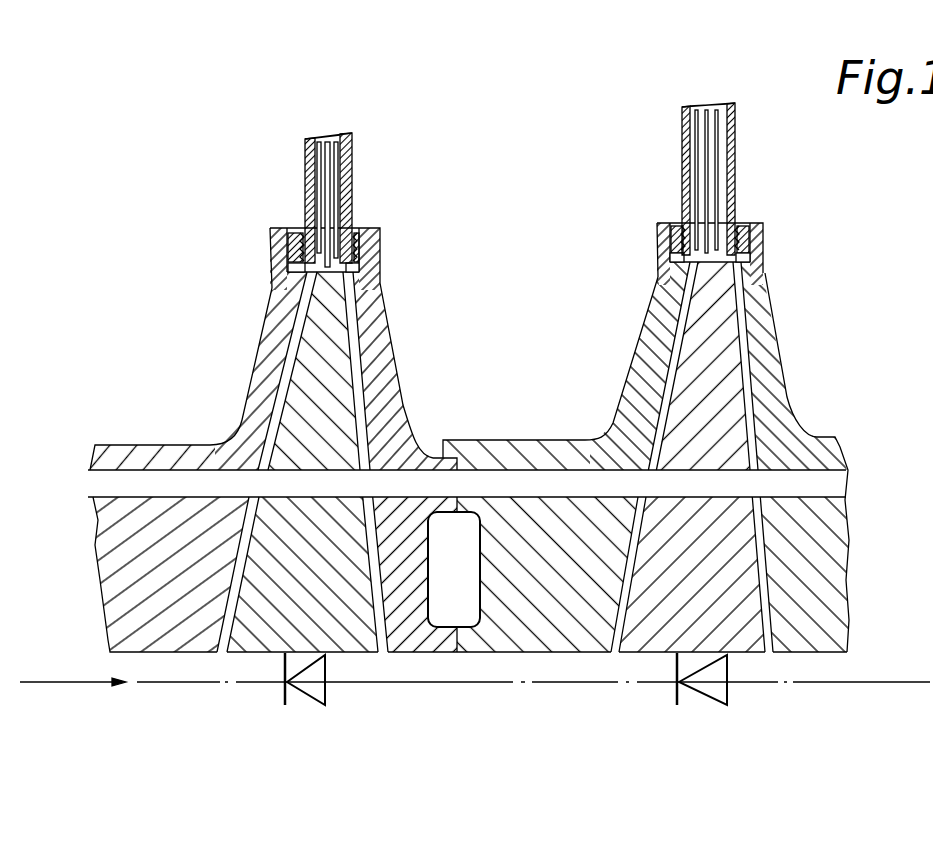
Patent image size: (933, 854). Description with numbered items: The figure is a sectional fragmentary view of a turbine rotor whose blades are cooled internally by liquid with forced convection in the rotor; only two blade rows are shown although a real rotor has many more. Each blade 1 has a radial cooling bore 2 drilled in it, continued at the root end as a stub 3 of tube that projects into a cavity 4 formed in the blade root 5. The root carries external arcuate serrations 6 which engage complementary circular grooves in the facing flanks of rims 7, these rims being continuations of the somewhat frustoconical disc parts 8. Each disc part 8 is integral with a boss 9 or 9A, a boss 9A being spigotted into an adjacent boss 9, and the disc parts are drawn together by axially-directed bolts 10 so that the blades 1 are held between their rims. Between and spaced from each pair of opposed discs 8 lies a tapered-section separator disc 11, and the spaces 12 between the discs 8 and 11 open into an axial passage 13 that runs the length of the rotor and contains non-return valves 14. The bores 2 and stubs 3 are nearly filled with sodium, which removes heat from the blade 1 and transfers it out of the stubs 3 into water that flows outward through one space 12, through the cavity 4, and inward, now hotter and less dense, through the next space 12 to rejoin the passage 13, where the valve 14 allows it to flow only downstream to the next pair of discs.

The blade 1 is at (355, 138).
The radial cooling bore 2 is at (334, 182).
The stub of tube 3 is at (355, 232).
The cavity 4 is at (356, 274).
The blade root 5 is at (362, 252).
The arcuate serrations 6 is at (292, 229).
The rim 7 is at (279, 242).
The disc part 8 is at (280, 318).
The boss 9 is at (117, 452).
The boss 9A is at (434, 457).
The axially-directed bolts 10 is at (835, 457).
The separator disc 11 is at (327, 412).
The space 12 is at (287, 368).
The axial passage 13 is at (347, 668).
The non-return valve 14 is at (313, 690).